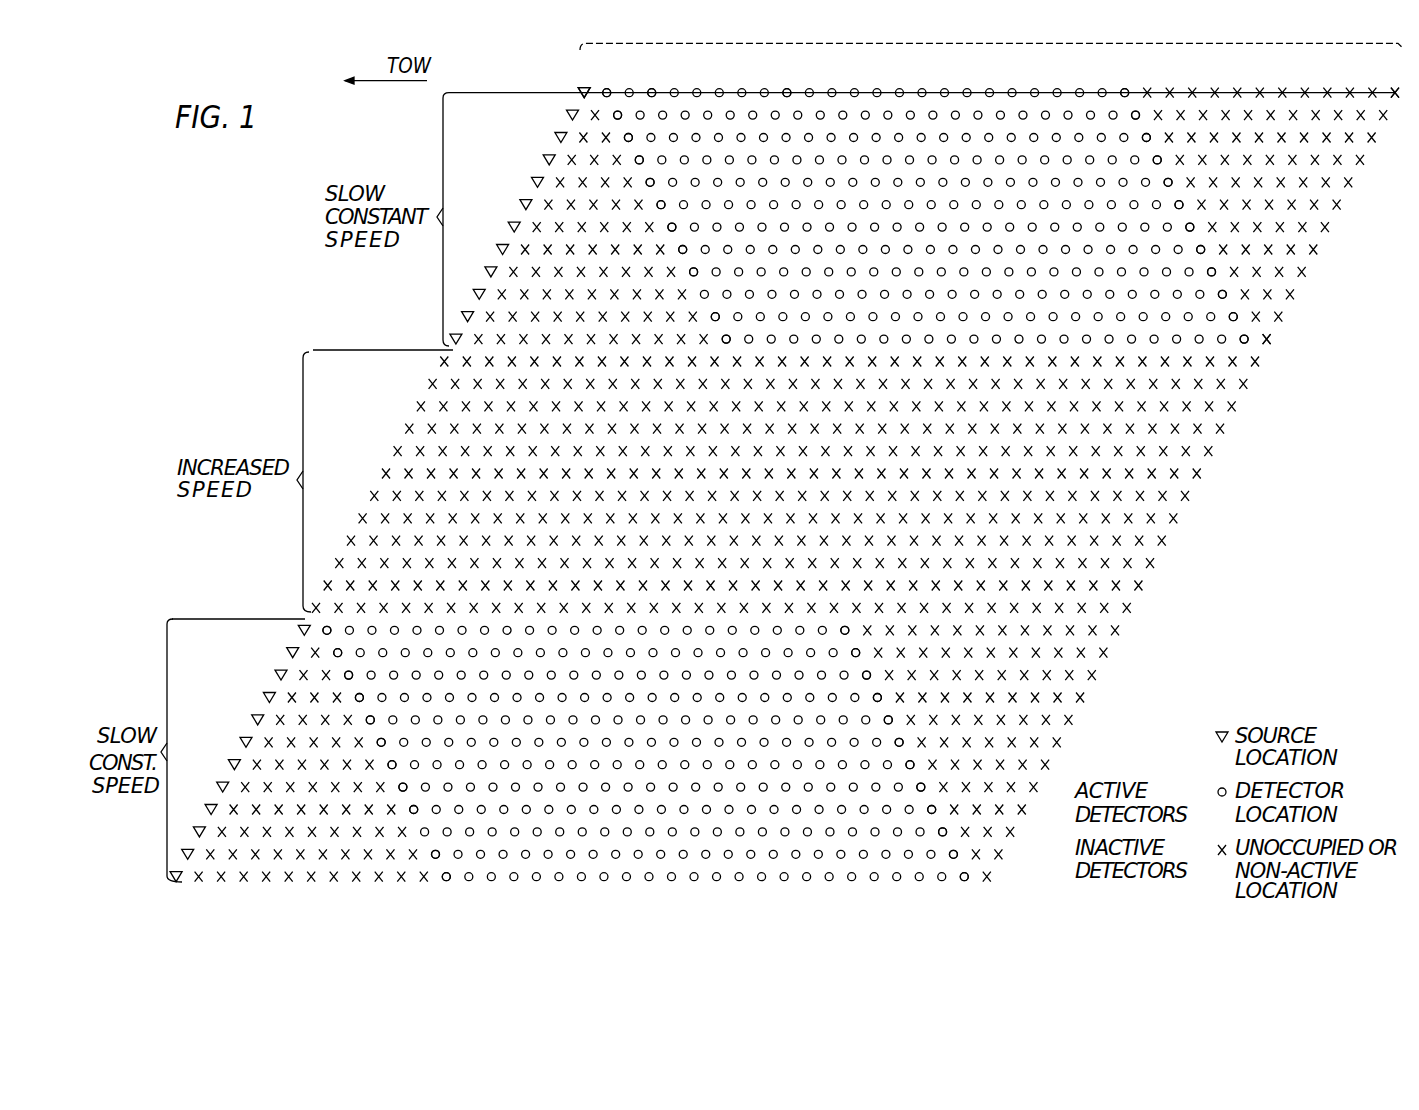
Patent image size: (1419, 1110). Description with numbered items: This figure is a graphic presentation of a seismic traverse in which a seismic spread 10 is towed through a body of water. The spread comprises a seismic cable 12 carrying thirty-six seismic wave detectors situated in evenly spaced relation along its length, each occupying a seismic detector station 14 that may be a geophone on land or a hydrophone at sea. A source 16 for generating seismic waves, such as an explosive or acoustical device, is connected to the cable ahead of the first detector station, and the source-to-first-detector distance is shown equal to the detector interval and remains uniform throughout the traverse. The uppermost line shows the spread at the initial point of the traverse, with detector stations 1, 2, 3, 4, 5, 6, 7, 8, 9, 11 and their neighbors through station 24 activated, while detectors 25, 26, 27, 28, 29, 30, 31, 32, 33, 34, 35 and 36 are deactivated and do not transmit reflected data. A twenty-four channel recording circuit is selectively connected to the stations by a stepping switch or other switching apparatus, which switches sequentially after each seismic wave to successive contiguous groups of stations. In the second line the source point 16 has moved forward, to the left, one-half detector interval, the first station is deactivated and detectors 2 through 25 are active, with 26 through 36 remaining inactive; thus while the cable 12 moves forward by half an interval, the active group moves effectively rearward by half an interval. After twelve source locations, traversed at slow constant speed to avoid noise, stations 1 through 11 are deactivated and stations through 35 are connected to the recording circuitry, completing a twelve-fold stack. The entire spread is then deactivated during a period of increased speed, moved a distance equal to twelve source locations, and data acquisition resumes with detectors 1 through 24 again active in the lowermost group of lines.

The seismic spread 10 is at (984, 44).
The seismic cable 12 is at (667, 79).
The seismic detector station 14 is at (787, 89).
The source 16 is at (584, 87).
The detector station 1 is at (464, 358).
The detector station 2 is at (473, 391).
The detector station 3 is at (484, 414).
The detector station 4 is at (494, 436).
The detector station 5 is at (505, 458).
The detector station 6 is at (516, 481).
The detector station 7 is at (527, 503).
The detector station 8 is at (538, 526).
The detector station 9 is at (549, 548).
The detector station 11 is at (567, 593).
The detector station 24 is at (990, 352).
The detector station 25 is at (1002, 375).
The detector station 26 is at (1013, 398).
The detector station 27 is at (1023, 420).
The detector station 28 is at (1034, 442).
The detector station 29 is at (1045, 465).
The detector station 30 is at (1056, 487).
The detector station 31 is at (1067, 510).
The detector station 32 is at (1078, 532).
The detector station 33 is at (1089, 554).
The detector station 34 is at (1099, 577).
The detector station 35 is at (1110, 599).
The detector station 36 is at (1333, 208).